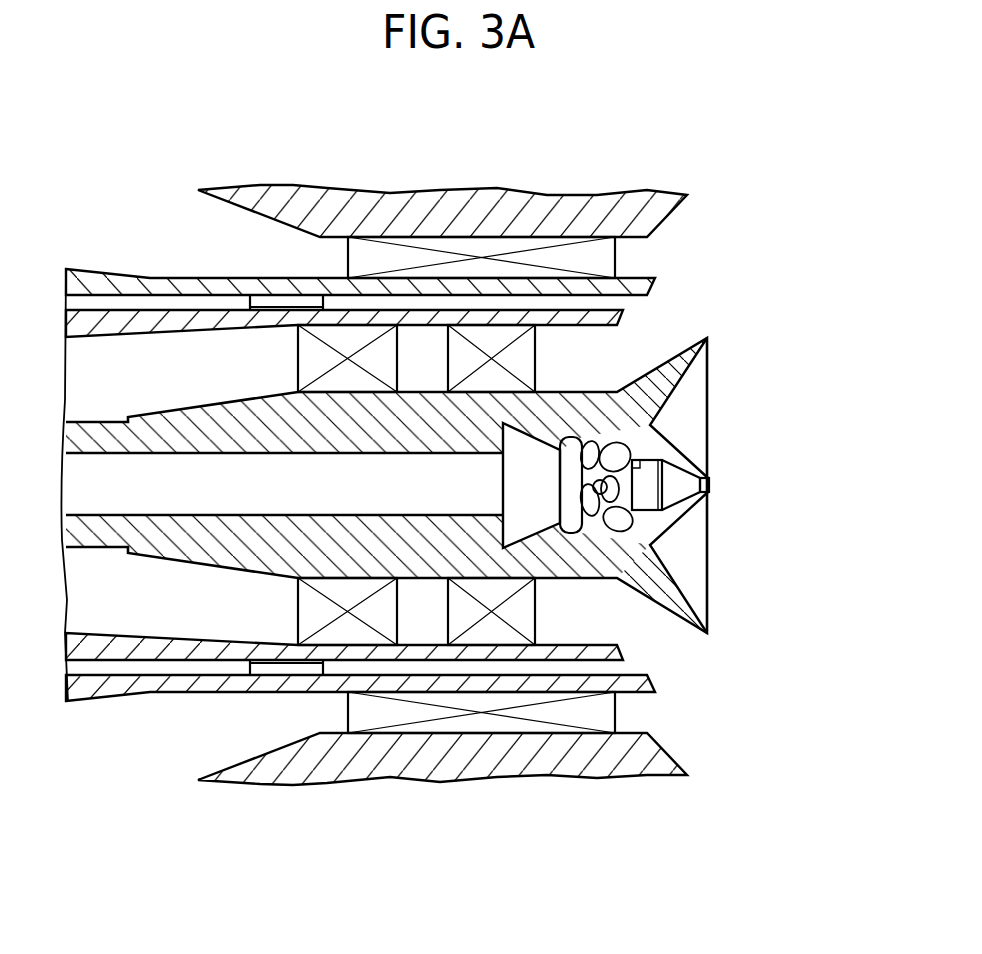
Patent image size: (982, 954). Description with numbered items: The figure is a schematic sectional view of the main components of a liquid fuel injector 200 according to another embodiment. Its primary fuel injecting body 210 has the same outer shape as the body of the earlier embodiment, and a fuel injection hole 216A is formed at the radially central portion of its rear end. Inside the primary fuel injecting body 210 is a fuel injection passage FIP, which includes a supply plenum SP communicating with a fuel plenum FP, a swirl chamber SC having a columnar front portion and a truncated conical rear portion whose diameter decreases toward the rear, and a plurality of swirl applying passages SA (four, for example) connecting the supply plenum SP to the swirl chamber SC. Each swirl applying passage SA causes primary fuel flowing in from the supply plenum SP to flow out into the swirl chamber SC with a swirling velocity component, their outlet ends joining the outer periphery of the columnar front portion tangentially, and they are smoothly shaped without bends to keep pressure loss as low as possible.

The liquid fuel injector 200 is at (726, 137).
The primary fuel injecting body 210 is at (771, 311).
The fuel injection hole 216A is at (709, 487).
The fuel plenum FP is at (547, 500).
The fuel injection passage FIP is at (807, 533).
The swirl chamber SC is at (652, 503).
The swirl applying passages SA is at (620, 527).
The supply plenum SP is at (576, 527).